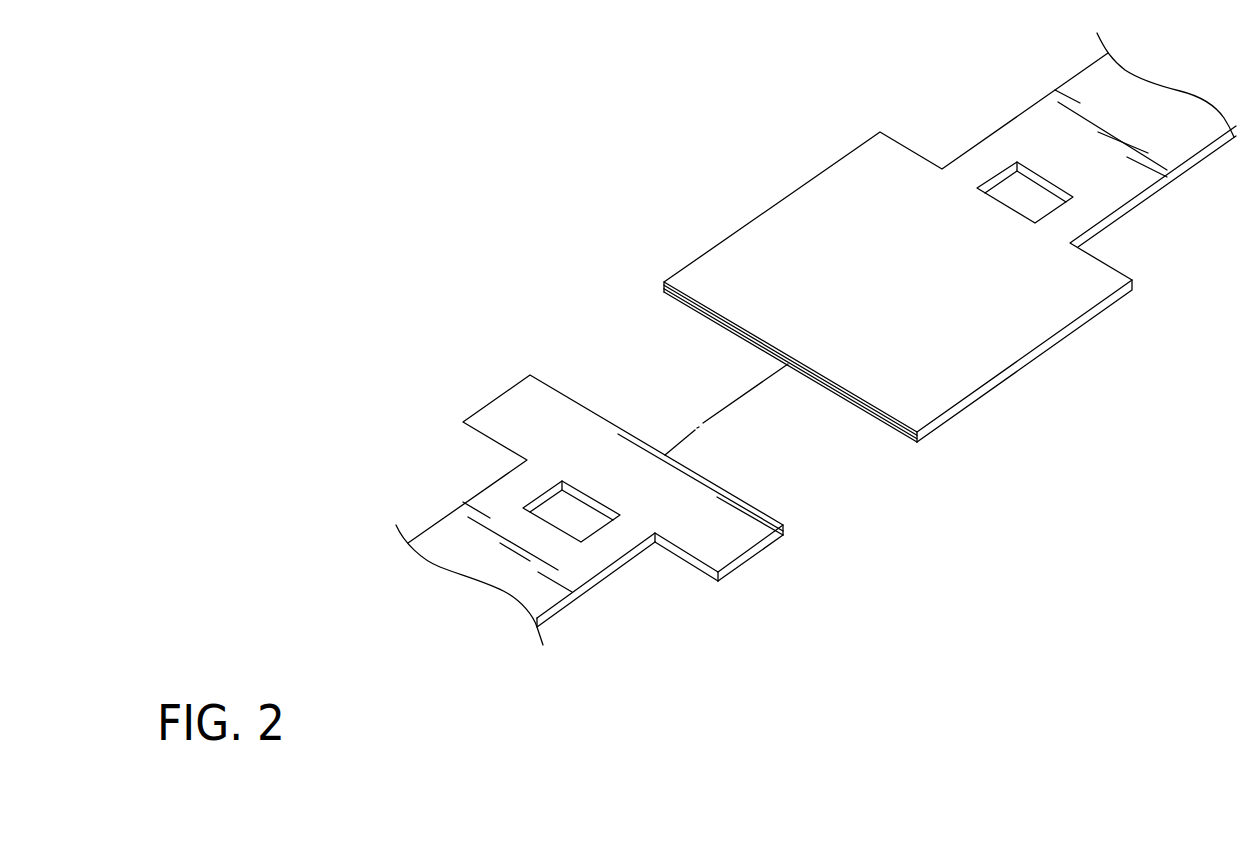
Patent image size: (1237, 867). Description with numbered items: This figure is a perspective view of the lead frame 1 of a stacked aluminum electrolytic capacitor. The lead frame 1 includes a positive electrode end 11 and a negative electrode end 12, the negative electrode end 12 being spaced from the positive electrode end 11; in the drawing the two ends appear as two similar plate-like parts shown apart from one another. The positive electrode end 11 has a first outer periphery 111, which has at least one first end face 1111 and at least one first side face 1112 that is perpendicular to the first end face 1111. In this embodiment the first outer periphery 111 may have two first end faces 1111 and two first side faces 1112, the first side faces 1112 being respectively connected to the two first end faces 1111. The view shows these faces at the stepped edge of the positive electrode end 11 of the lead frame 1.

The lead frame 1 is at (582, 236).
The positive electrode end 11 is at (519, 349).
The negative electrode end 12 is at (633, 256).
The first outer periphery 111 is at (659, 569).
The first end face 1111 is at (710, 572).
The first side face 1112 is at (767, 545).